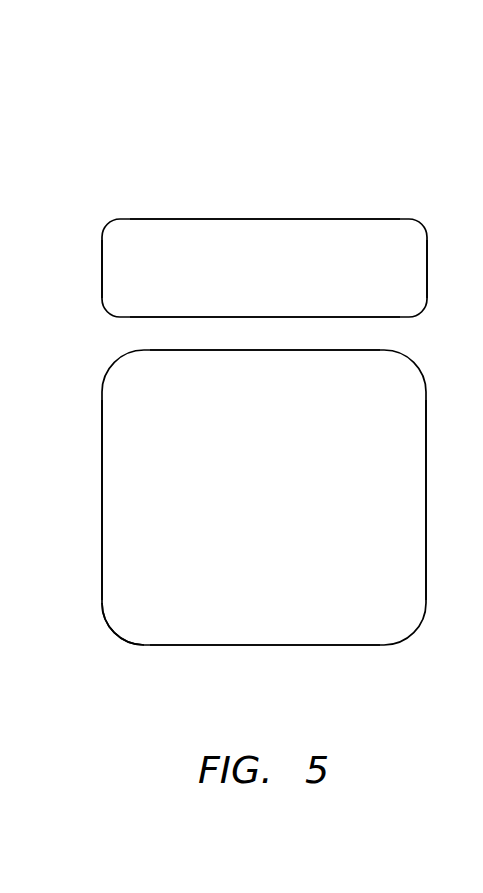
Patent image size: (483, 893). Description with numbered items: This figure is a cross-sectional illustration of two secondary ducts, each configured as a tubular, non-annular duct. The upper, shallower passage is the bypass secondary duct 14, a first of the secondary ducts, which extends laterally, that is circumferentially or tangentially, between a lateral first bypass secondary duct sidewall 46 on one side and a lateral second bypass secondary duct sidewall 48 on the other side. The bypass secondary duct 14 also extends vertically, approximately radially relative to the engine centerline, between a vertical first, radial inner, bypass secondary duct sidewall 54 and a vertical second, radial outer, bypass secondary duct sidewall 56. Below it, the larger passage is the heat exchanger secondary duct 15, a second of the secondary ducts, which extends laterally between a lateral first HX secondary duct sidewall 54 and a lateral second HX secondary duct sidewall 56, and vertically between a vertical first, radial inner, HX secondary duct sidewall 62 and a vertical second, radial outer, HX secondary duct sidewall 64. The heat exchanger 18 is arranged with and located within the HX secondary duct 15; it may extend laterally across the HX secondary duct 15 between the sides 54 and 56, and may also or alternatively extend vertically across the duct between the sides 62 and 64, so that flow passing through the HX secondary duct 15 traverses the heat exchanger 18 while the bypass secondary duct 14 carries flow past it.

The bypass secondary duct 14 is at (252, 282).
The heat exchanger secondary duct 15 is at (280, 513).
The heat exchanger 18 is at (155, 613).
The lateral first bypass secondary duct sidewall 46 is at (103, 272).
The lateral second bypass secondary duct sidewall 48 is at (427, 272).
The vertical first bypass secondary duct sidewall 54 is at (312, 315).
The vertical second bypass secondary duct sidewall 56 is at (302, 218).
The vertical first HX secondary duct sidewall 62 is at (260, 645).
The vertical second HX secondary duct sidewall 64 is at (279, 350).